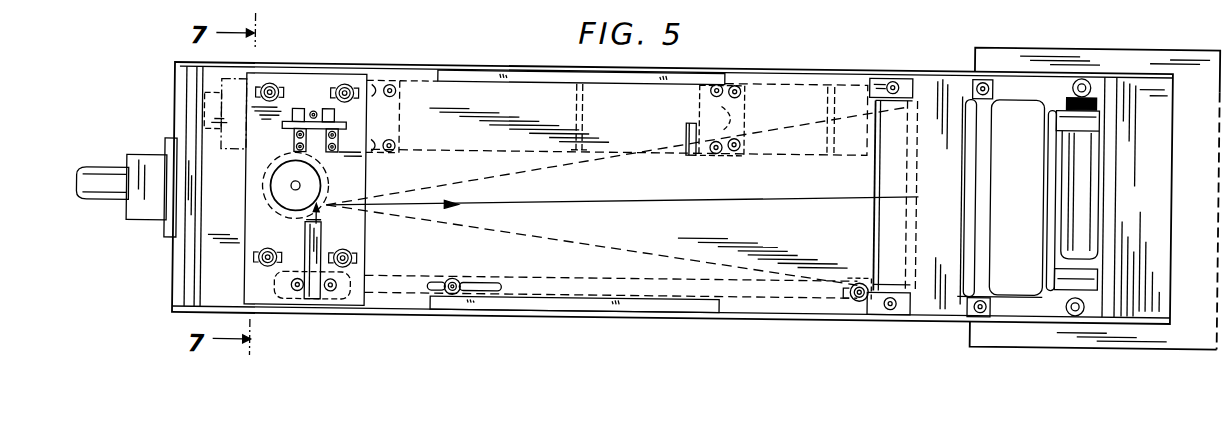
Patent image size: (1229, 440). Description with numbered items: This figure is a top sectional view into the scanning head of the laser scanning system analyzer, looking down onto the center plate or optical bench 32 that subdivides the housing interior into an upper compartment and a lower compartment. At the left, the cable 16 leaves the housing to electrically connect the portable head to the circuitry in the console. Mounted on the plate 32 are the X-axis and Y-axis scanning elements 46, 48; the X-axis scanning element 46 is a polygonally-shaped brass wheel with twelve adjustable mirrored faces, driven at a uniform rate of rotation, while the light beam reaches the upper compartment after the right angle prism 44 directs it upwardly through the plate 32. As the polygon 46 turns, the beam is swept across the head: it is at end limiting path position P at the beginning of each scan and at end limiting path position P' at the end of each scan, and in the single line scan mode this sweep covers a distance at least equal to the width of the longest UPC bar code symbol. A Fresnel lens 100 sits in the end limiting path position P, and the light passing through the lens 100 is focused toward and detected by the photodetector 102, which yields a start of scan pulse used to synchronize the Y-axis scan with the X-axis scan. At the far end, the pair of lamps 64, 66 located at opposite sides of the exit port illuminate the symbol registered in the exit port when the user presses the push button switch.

The cable 16 is at (96, 180).
The center plate 32 is at (411, 261).
The right angle prism 44 is at (343, 309).
The X-axis scanning element 46 is at (340, 191).
The Y-axis scanning element 48 is at (303, 260).
The lamp 64 is at (1083, 68).
The lamp 66 is at (1080, 306).
The Fresnel lens 100 is at (686, 120).
The photodetector 102 is at (742, 114).
The end limiting path position P is at (617, 156).
The end limiting path position P' is at (591, 245).